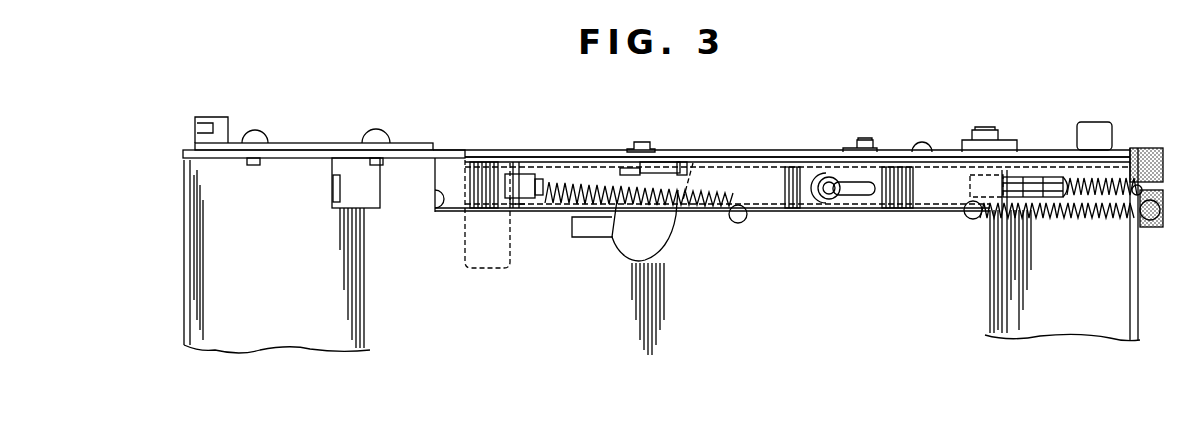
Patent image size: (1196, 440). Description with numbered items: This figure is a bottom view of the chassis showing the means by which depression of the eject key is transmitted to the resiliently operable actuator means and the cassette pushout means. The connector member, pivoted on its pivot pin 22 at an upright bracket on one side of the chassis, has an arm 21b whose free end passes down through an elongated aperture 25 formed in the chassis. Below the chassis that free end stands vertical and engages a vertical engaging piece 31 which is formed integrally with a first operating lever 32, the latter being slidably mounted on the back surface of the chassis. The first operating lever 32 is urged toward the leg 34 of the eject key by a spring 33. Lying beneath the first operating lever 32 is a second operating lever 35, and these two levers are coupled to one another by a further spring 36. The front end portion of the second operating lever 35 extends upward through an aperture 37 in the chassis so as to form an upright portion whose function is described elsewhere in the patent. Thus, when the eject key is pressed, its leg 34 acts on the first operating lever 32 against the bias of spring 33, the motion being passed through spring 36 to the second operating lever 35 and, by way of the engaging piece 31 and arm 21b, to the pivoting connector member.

The arm 21b is at (628, 167).
The pivot pin 22 is at (645, 142).
The elongated aperture 25 is at (588, 166).
The vertical engaging piece 31 is at (670, 165).
The first operating lever 32 is at (930, 197).
The spring 33 is at (1065, 217).
The leg 34 is at (1015, 185).
The second operating lever 35 is at (533, 203).
The spring 36 is at (615, 236).
The aperture 37 is at (436, 212).